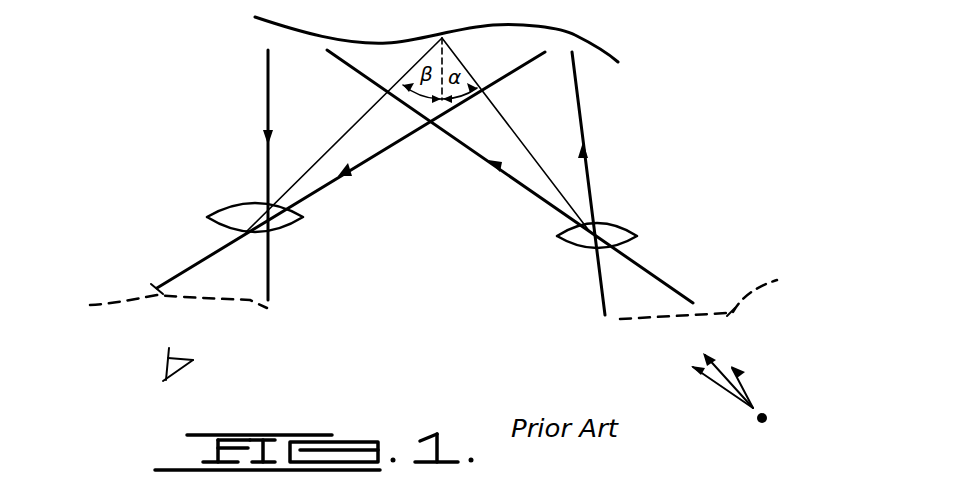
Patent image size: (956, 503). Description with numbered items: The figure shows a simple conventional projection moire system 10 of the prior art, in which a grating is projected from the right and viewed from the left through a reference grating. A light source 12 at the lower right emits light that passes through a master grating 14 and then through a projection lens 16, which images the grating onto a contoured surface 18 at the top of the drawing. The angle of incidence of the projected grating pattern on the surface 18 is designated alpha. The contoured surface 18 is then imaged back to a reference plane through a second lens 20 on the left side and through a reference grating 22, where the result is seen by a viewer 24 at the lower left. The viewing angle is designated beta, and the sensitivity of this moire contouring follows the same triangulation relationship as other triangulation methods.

The moire system 10 is at (747, 90).
The light source 12 is at (770, 420).
The master grating 14 is at (717, 291).
The projection lens 16 is at (637, 234).
The contoured surface 18 is at (608, 50).
The second lens 20 is at (217, 212).
The reference grating 22 is at (159, 305).
The viewer 24 is at (163, 372).